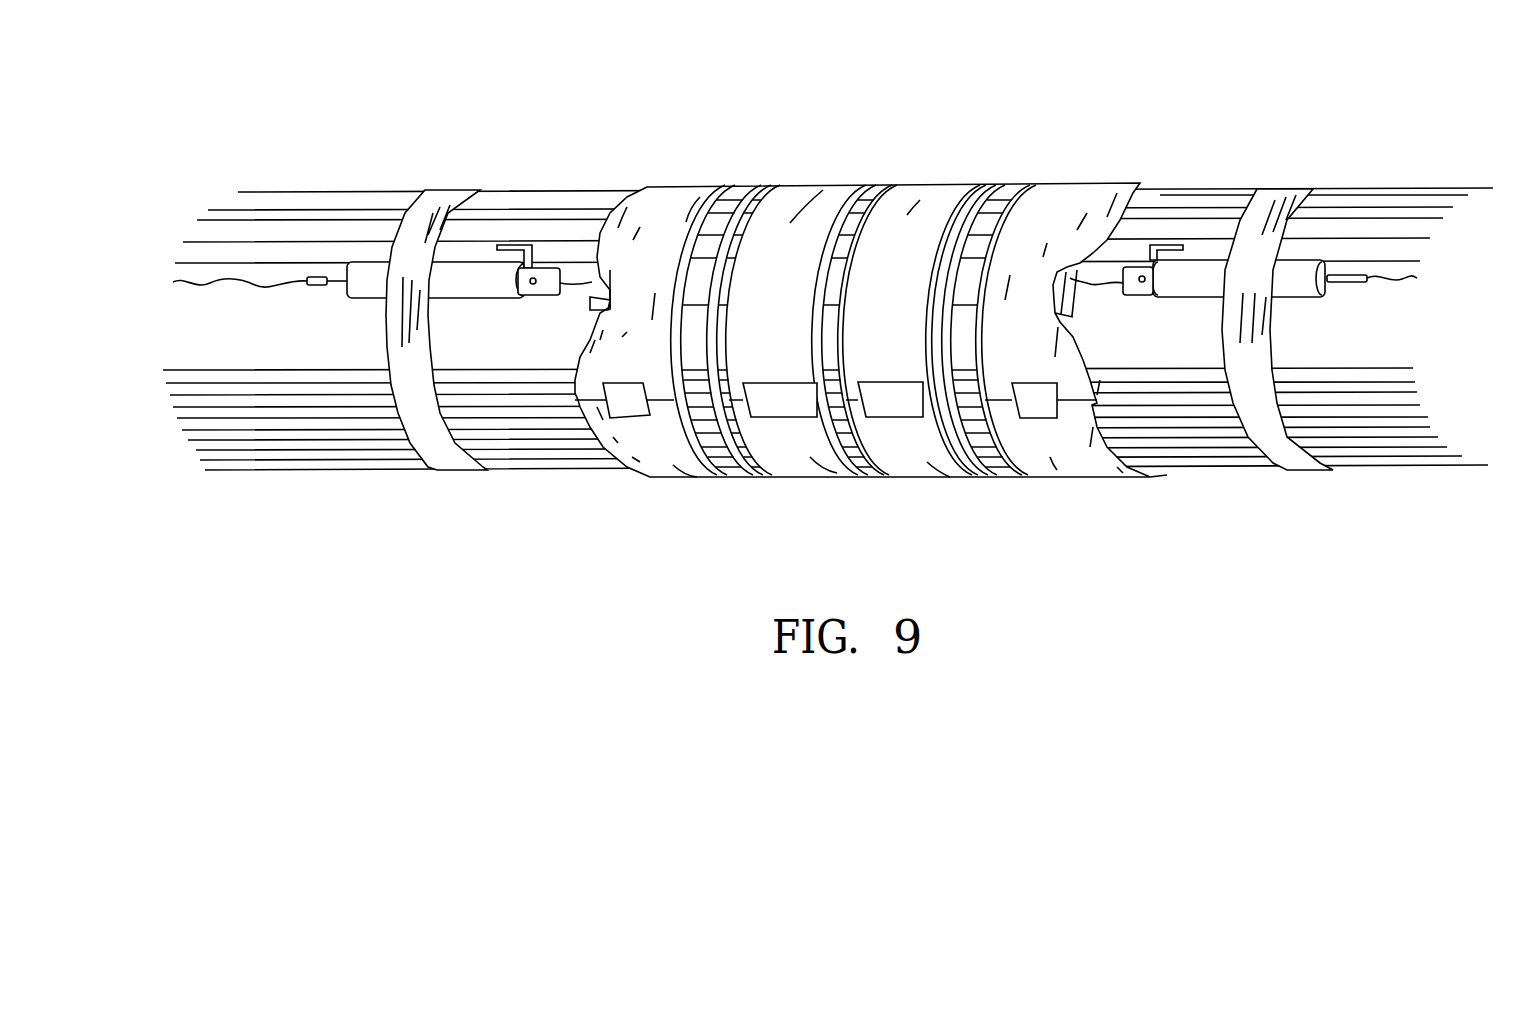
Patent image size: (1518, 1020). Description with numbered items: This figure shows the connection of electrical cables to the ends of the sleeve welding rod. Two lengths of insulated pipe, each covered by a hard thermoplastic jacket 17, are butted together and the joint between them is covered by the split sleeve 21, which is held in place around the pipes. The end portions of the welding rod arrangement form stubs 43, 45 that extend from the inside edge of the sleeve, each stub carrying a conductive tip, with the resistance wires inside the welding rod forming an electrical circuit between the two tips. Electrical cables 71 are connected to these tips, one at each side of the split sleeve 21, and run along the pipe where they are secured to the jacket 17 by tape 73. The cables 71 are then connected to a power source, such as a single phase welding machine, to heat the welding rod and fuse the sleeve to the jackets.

The thermoplastic jacket 17 is at (503, 207).
The split sleeve 21 is at (904, 185).
The stub 43 is at (574, 275).
The stub 45 is at (1104, 265).
The electrical cable 71 is at (277, 280).
The tape 73 is at (450, 455).